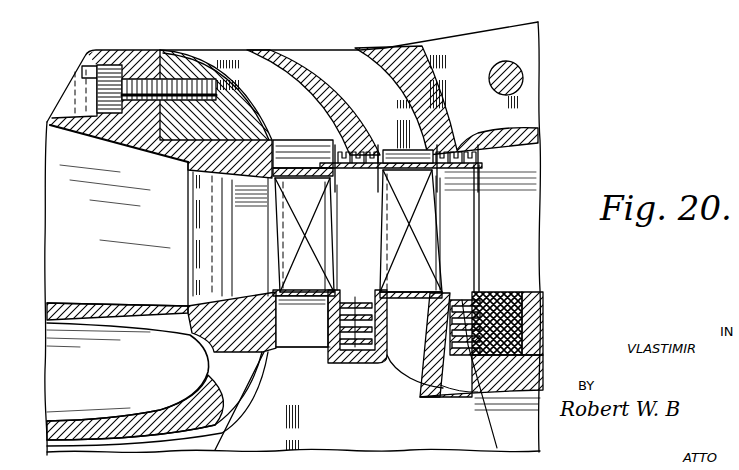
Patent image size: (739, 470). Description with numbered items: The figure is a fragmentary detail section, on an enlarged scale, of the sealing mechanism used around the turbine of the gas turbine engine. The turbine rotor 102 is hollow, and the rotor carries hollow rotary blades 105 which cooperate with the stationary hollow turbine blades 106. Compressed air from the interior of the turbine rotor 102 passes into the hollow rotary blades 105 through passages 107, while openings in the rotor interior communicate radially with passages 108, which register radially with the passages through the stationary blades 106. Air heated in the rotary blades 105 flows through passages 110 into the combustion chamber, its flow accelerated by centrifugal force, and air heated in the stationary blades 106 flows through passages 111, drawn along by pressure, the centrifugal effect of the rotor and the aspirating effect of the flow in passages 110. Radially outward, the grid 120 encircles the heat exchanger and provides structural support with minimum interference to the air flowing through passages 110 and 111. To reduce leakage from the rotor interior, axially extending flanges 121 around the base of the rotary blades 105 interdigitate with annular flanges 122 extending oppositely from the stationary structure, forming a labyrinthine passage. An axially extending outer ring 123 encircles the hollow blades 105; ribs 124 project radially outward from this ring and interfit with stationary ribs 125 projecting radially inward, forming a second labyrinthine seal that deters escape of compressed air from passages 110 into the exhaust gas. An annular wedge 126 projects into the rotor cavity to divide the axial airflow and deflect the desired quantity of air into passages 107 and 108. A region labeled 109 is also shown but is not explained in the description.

The turbine rotor 102 is at (365, 408).
The hollow rotary blades 105 is at (420, 196).
The stationary hollow turbine blades 106 is at (312, 207).
The passages 107 is at (420, 362).
The passages 108 is at (312, 333).
The chamber 109 is at (187, 265).
The passages 110 is at (380, 95).
The passages 111 is at (279, 95).
The grid 120 is at (291, 52).
The axially extending flanges 121 is at (327, 357).
The annular flanges 122 is at (502, 290).
The outer ring 123 is at (467, 243).
The ribs 124 is at (368, 168).
The stationary ribs 125 is at (376, 155).
The annular wedge 126 is at (407, 392).